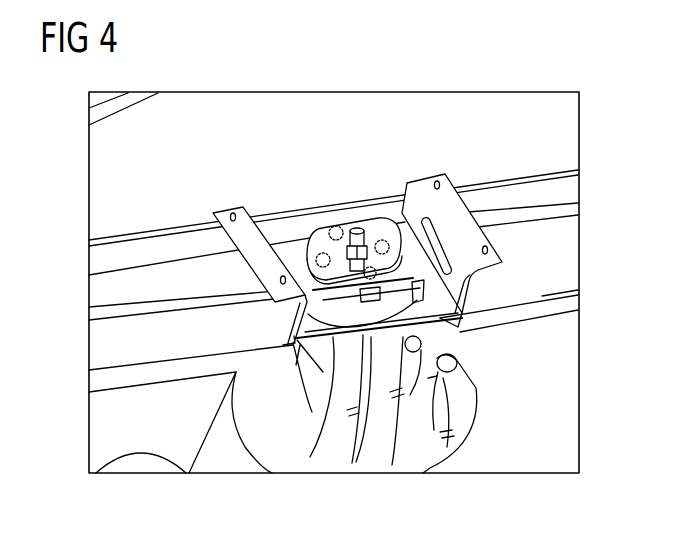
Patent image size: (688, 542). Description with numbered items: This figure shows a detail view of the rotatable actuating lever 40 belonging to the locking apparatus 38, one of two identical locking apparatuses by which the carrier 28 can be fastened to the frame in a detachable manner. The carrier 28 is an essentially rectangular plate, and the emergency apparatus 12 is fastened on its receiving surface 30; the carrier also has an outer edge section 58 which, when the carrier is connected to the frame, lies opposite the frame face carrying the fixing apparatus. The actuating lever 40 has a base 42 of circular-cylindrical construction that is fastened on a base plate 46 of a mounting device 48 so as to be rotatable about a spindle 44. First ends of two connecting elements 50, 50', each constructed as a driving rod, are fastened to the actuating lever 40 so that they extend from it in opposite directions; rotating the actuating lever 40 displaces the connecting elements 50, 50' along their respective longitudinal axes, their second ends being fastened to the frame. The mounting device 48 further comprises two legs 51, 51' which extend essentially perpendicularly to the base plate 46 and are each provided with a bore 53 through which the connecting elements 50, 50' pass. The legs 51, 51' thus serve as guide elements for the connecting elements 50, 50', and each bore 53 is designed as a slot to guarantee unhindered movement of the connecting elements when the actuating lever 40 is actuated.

The emergency apparatus 12 is at (327, 135).
The carrier 28 is at (507, 327).
The receiving surface 30 is at (96, 298).
The locking apparatus 38 is at (552, 248).
The rotatable actuating lever 40 is at (312, 237).
The base 42 is at (380, 318).
The spindle 44 is at (351, 232).
The base plate 46 is at (316, 352).
The mounting device 48 is at (422, 178).
The connecting element 50 is at (333, 208).
The connecting element 50' is at (194, 326).
The leg 51 is at (484, 299).
The leg 51' is at (265, 320).
The bore 53 is at (362, 230).
The outer edge section 58 is at (542, 285).